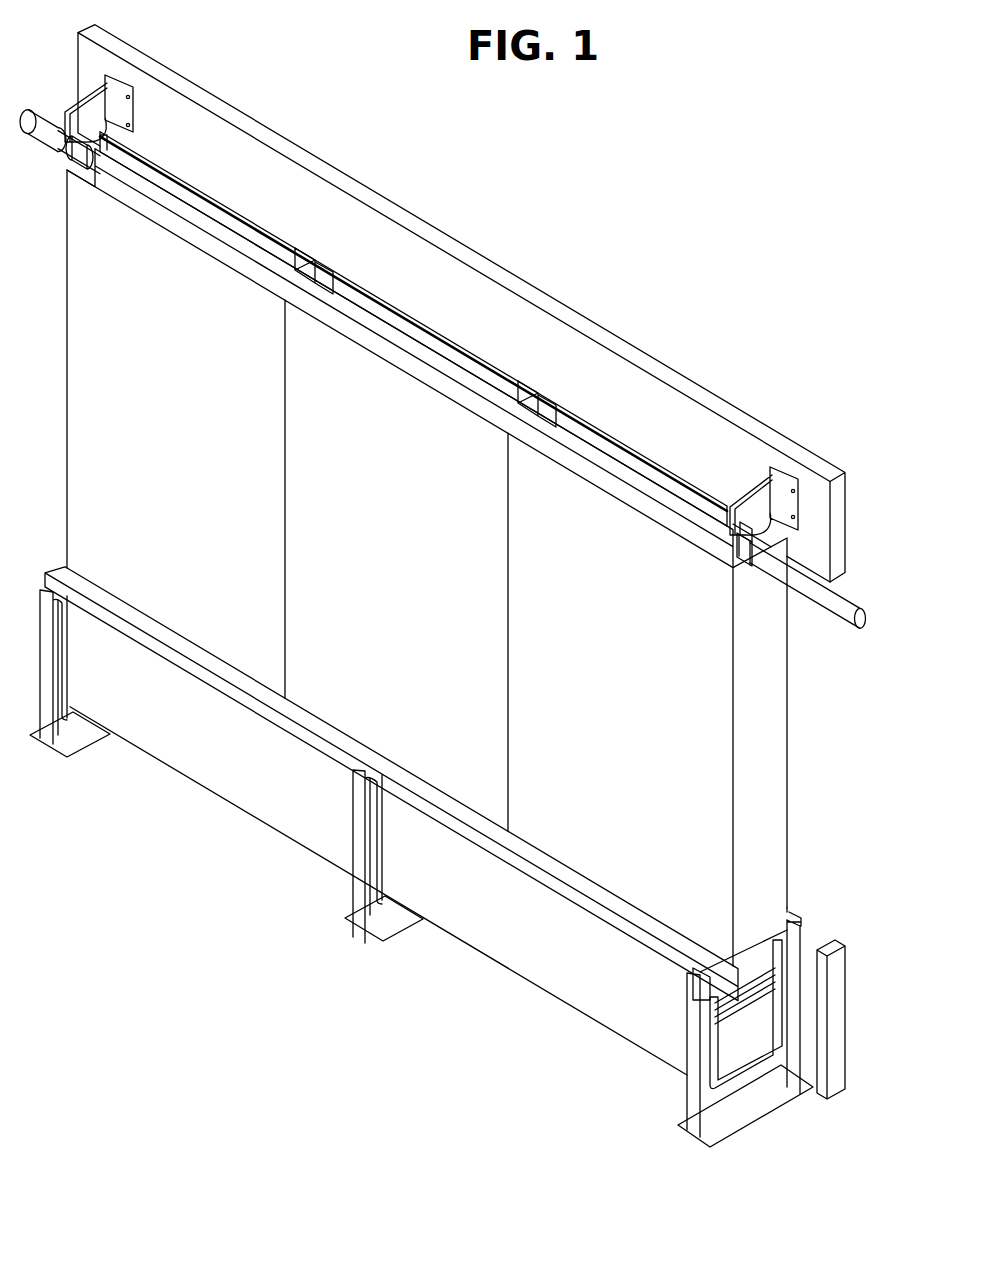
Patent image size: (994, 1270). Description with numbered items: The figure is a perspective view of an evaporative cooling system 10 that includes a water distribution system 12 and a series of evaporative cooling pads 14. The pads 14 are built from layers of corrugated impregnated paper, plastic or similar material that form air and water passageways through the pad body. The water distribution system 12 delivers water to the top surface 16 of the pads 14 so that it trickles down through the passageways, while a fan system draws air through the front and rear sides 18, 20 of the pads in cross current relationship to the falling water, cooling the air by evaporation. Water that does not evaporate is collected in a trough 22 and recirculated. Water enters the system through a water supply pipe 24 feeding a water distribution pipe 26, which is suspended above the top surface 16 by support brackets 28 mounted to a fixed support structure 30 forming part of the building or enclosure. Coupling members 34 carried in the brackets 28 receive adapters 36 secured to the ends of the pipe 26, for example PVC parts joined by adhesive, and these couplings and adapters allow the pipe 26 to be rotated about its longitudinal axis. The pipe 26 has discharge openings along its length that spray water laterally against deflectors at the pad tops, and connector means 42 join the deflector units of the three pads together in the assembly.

The evaporative cooling system 10 is at (805, 812).
The water distribution system 12 is at (862, 495).
The evaporative cooling pads 14 is at (762, 769).
The top surface 16 is at (612, 490).
The front side 18 is at (788, 688).
The rear side 20 is at (583, 853).
The trough 22 is at (748, 1085).
The water supply pipe 24 is at (840, 612).
The water distribution pipe 26 is at (248, 253).
The support brackets 28 is at (108, 100).
The fixed support structure 30 is at (283, 148).
The coupling members 34 is at (58, 150).
The adapters 36 is at (40, 117).
The connector means 42 is at (318, 272).